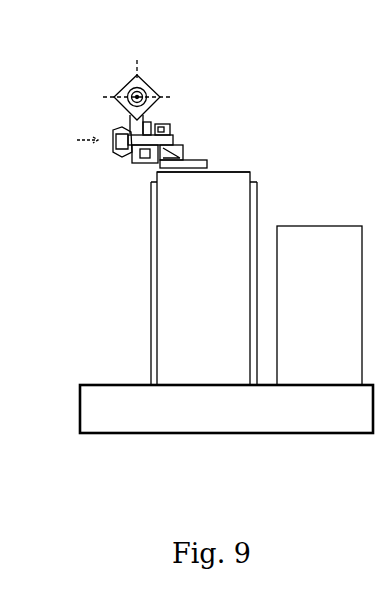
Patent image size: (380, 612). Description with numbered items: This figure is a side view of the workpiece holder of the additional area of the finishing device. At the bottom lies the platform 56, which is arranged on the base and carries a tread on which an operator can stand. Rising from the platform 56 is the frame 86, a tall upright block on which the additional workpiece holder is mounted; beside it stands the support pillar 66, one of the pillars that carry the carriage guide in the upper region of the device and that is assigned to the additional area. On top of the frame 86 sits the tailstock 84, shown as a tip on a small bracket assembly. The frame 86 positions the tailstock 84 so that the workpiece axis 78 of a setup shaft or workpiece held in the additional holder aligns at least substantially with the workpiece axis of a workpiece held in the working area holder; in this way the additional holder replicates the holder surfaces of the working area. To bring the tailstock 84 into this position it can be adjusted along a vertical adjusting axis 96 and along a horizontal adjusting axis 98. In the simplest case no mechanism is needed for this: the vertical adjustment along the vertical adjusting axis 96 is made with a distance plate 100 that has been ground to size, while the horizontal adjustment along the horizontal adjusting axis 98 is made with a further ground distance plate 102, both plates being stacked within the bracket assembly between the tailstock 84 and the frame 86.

The platform 56 is at (146, 418).
The support pillar 66 is at (318, 247).
The workpiece axis 78 is at (108, 118).
The tailstock 84 is at (120, 97).
The frame 86 is at (165, 280).
The vertical adjusting axis 96 is at (182, 192).
The horizontal adjusting axis 98 is at (173, 140).
The distance plate 100 is at (212, 168).
The distance plate 102 is at (143, 168).